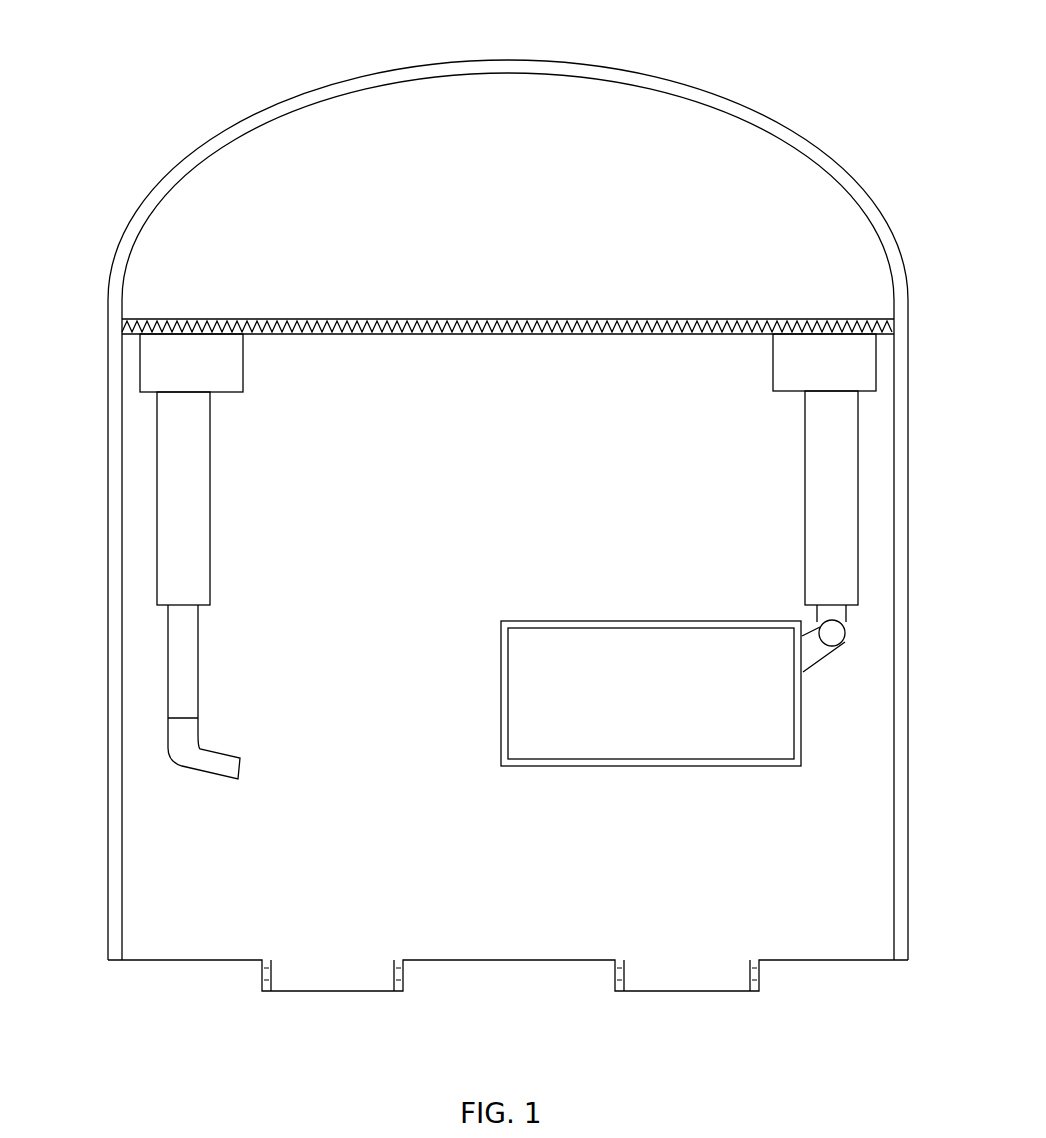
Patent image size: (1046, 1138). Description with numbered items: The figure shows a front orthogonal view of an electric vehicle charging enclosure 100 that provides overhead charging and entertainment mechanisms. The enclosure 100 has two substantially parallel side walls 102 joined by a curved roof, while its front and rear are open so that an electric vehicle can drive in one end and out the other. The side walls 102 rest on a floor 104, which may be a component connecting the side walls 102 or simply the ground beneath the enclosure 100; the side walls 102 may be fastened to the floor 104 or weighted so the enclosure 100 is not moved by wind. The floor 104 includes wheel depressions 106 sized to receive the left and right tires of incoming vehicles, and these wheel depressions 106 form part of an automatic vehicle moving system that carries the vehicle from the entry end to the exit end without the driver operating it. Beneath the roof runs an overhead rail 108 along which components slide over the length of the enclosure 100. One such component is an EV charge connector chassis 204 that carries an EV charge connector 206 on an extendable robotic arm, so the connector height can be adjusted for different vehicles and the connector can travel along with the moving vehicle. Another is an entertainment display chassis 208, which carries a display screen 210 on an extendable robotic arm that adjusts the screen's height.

The electric vehicle charging enclosure 100 is at (243, 84).
The side walls 102 is at (108, 464).
The floor 104 is at (198, 961).
The wheel depressions 106 is at (665, 991).
The overhead rail 108 is at (735, 318).
The EV charge connector chassis 204 is at (157, 582).
The EV charge connector 206 is at (175, 760).
The entertainment display chassis 208 is at (858, 459).
The display screen 210 is at (801, 720).